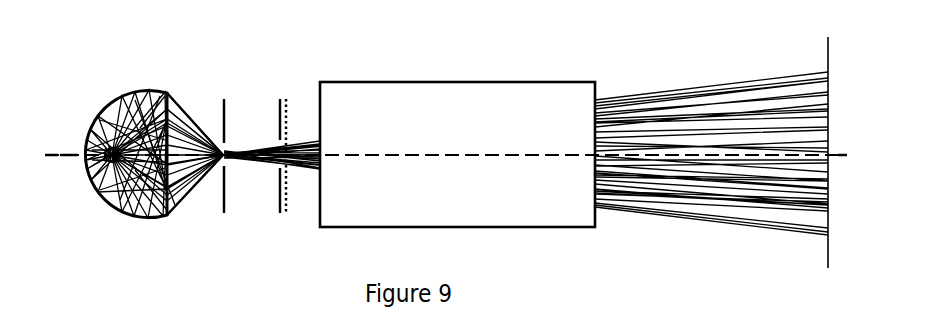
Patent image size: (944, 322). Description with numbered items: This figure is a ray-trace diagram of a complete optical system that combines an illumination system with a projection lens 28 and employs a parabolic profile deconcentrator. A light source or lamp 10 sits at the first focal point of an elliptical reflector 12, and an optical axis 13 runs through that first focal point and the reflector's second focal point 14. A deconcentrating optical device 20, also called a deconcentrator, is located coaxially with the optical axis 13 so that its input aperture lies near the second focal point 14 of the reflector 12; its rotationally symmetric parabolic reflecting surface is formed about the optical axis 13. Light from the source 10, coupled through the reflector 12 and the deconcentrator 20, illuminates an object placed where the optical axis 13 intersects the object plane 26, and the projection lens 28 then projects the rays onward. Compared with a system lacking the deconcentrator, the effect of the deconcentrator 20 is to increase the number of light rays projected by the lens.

The light source 10 is at (96, 183).
The elliptical reflector 12 is at (118, 100).
The optical axis 13 is at (70, 152).
The second focal point 14 is at (226, 210).
The deconcentrating optical device 20 is at (263, 138).
The object plane 26 is at (288, 100).
The projection lens 28 is at (370, 82).